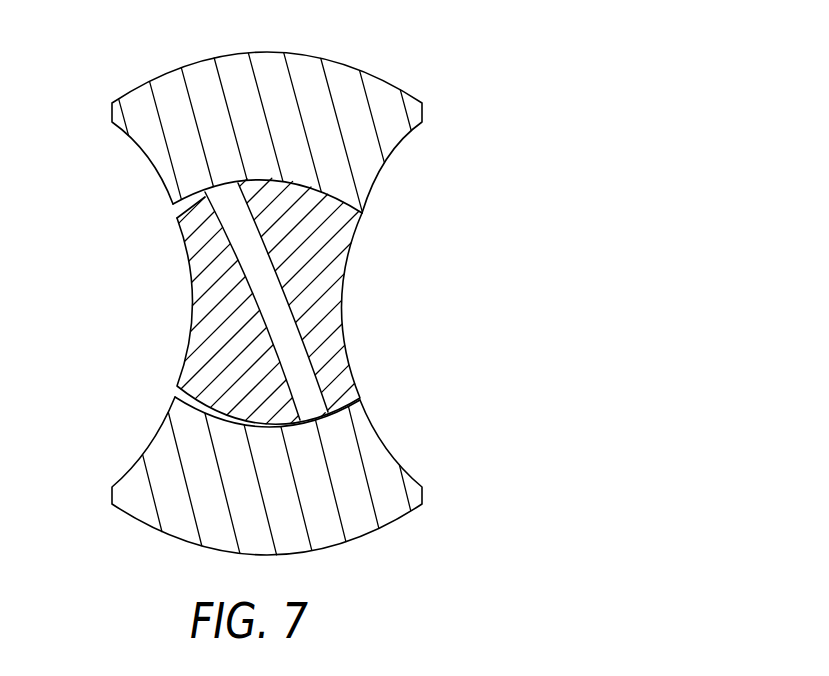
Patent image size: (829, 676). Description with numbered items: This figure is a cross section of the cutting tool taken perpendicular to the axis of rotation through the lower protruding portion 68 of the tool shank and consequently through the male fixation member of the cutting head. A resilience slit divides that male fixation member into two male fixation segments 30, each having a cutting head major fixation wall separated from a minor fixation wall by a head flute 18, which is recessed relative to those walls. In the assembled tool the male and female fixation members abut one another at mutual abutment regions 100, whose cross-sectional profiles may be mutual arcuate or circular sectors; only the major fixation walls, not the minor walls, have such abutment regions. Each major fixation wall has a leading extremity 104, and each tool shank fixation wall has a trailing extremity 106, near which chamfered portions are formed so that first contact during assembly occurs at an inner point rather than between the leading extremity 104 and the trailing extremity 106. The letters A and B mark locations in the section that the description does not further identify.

The lower protruding portion 68 is at (343, 95).
The leading extremity 104 is at (362, 213).
The head flute 18 is at (348, 360).
The trailing extremity 106 is at (173, 203).
The mutual abutment region 100 is at (315, 190).
The male fixation segment 30 is at (213, 280).
The point A is at (197, 192).
The point B is at (186, 214).